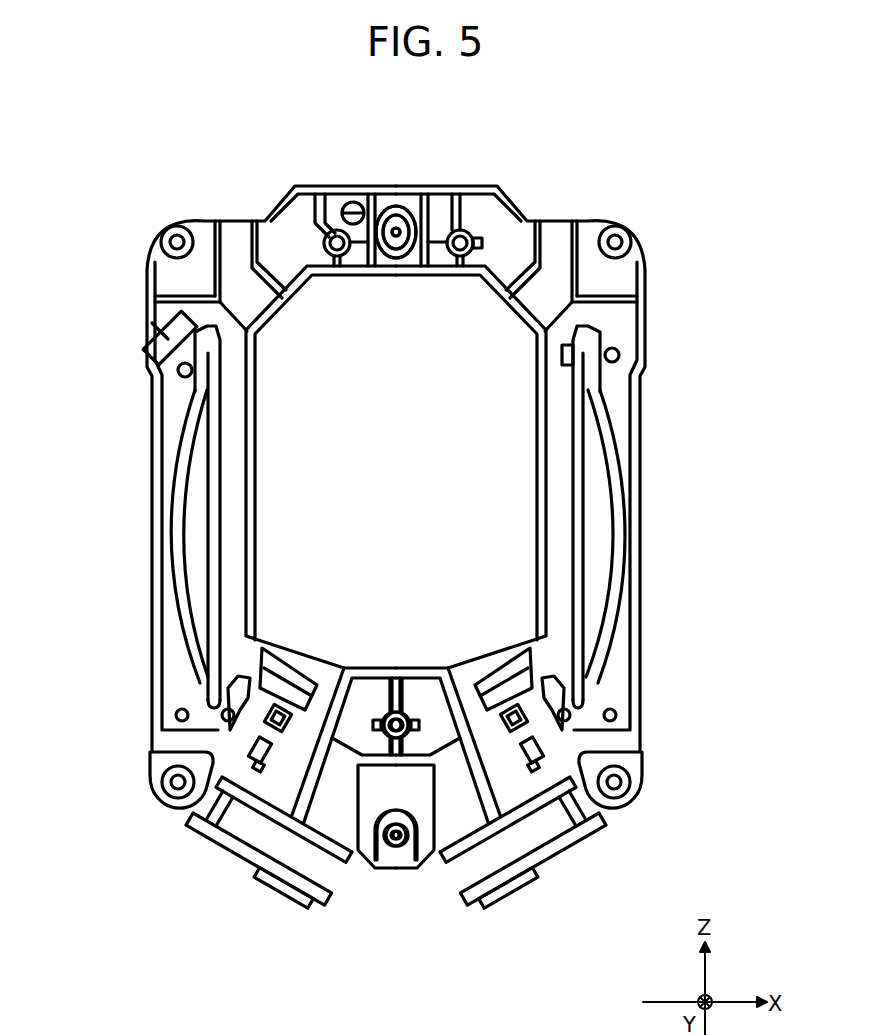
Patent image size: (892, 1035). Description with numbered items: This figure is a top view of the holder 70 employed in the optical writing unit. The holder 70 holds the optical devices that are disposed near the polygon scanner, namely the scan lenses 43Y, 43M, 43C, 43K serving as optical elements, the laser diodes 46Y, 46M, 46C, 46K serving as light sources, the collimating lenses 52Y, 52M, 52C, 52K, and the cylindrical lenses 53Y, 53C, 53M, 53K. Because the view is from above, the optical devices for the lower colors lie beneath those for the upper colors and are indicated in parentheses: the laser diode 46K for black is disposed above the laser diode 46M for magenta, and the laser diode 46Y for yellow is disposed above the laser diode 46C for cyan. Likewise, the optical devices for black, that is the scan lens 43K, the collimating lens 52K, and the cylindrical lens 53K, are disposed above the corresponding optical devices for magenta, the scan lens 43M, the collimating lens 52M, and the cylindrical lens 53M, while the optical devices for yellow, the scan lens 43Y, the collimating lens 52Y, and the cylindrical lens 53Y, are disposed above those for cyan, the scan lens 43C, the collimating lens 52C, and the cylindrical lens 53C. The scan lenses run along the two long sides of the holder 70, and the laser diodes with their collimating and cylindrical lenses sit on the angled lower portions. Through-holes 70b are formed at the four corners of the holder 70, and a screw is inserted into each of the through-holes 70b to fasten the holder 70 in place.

The holder 70 is at (562, 182).
The through-hole 70b is at (163, 230).
The scan lens 43Y is at (192, 526).
The scan lens 43C is at (133, 536).
The scan lens 43K is at (603, 548).
The scan lens 43M is at (682, 536).
The cylindrical lens 53Y is at (284, 672).
The cylindrical lens 53C is at (190, 679).
The cylindrical lens 53K is at (512, 670).
The cylindrical lens 53M is at (621, 689).
The collimating lens 52Y is at (250, 747).
The collimating lens 52C is at (176, 758).
The collimating lens 52K is at (540, 747).
The collimating lens 52M is at (652, 740).
The laser diode 46Y is at (238, 797).
The laser diode 46C is at (269, 848).
The laser diode 46K is at (555, 793).
The laser diode 46M is at (551, 842).